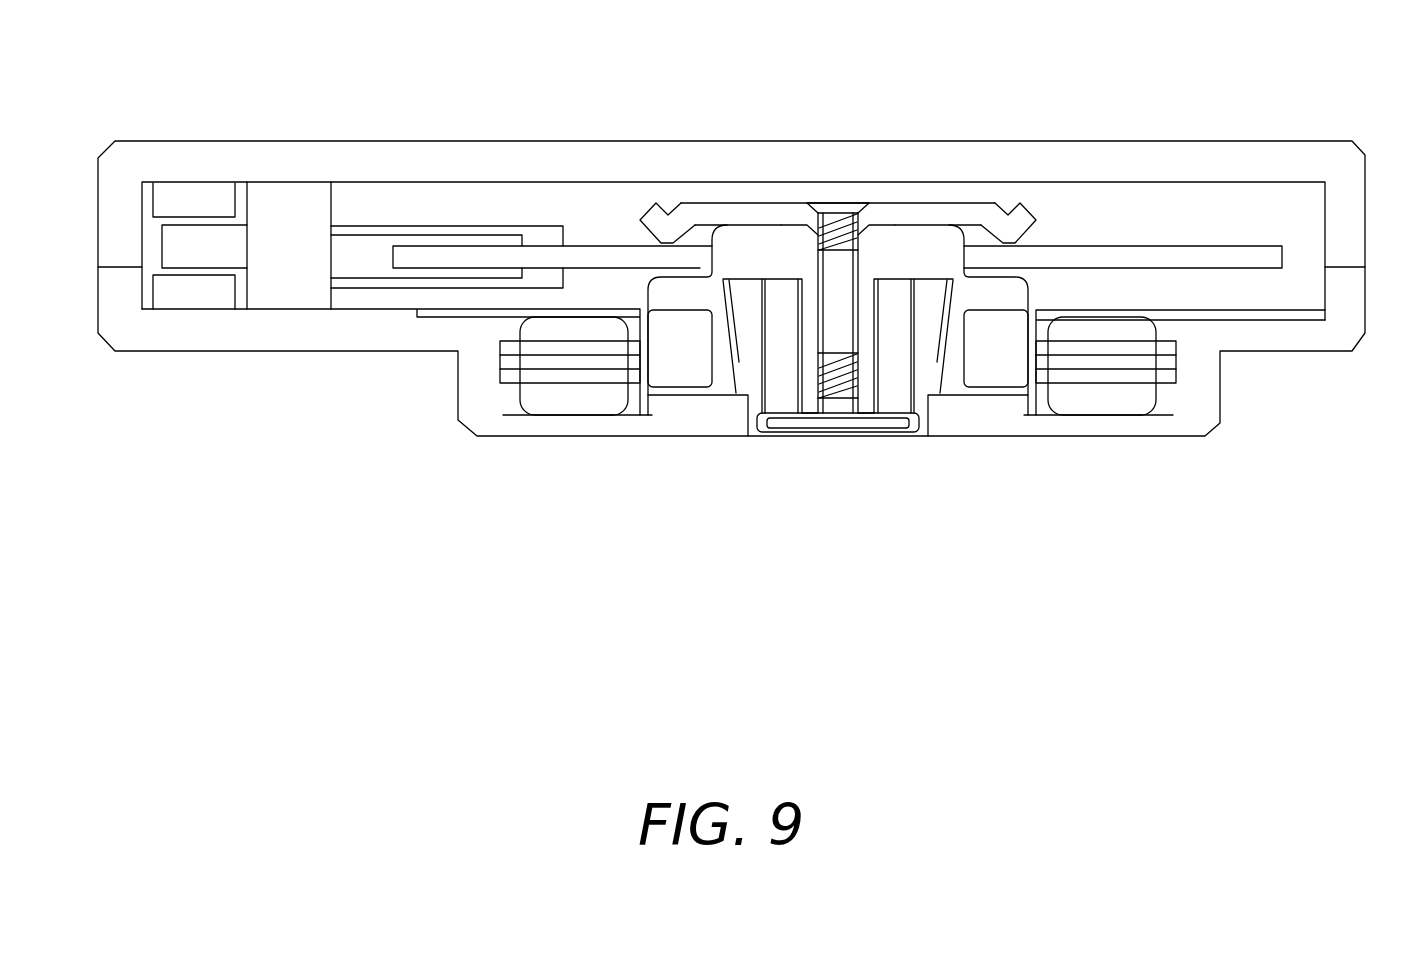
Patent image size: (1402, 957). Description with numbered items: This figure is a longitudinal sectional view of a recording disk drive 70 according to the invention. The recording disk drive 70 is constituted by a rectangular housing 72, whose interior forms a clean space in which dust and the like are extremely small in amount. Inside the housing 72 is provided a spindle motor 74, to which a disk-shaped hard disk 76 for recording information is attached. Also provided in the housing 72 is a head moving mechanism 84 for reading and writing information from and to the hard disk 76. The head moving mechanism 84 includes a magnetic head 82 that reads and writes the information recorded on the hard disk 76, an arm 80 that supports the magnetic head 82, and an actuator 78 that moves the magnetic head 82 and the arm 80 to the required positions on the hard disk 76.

The recording disk drive 70 is at (1323, 395).
The housing 72 is at (992, 165).
The spindle motor 74 is at (987, 480).
The hard disk 76 is at (1158, 257).
The actuator 78 is at (310, 393).
The arm 80 is at (383, 228).
The magnetic head 82 is at (540, 247).
The head moving mechanism 84 is at (288, 247).